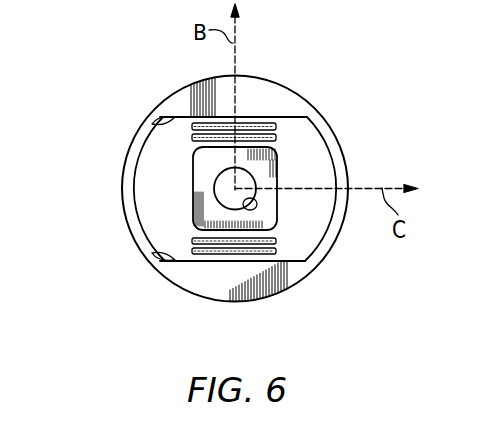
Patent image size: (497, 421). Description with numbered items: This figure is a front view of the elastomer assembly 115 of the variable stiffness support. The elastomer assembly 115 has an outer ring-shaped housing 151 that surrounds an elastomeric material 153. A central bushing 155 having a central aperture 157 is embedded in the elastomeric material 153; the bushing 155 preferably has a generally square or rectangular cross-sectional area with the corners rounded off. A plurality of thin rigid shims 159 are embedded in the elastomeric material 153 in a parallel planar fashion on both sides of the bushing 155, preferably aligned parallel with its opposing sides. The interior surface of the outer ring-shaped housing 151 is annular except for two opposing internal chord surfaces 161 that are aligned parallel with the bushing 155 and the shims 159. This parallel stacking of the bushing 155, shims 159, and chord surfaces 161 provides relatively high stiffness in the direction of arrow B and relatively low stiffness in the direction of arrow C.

The elastomer assembly 115 is at (126, 64).
The outer ring-shaped housing 151 is at (338, 144).
The elastomeric material 153 is at (140, 193).
The central bushing 155 is at (193, 200).
The central aperture 157 is at (246, 208).
The thin rigid shims 159 is at (245, 117).
The internal chord surfaces 161 is at (147, 117).